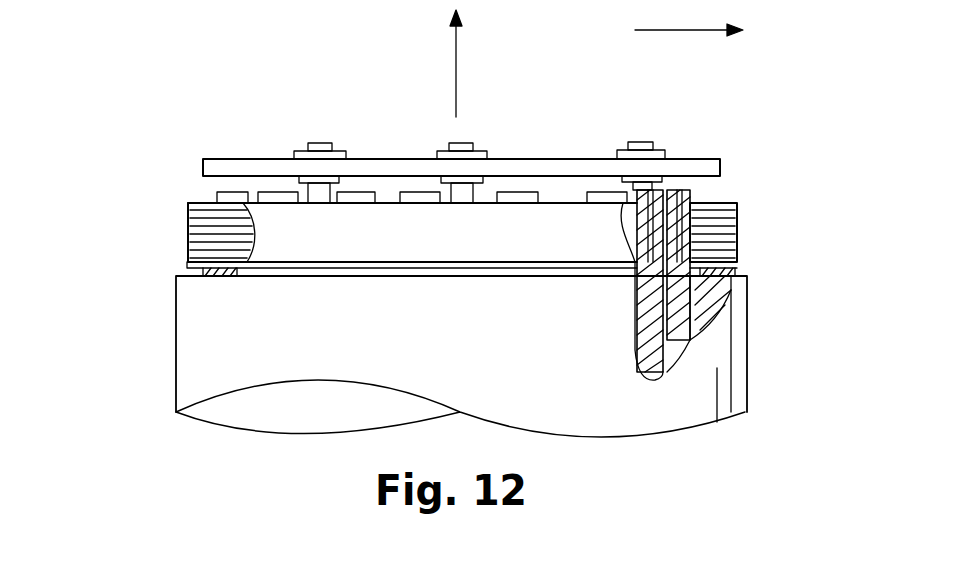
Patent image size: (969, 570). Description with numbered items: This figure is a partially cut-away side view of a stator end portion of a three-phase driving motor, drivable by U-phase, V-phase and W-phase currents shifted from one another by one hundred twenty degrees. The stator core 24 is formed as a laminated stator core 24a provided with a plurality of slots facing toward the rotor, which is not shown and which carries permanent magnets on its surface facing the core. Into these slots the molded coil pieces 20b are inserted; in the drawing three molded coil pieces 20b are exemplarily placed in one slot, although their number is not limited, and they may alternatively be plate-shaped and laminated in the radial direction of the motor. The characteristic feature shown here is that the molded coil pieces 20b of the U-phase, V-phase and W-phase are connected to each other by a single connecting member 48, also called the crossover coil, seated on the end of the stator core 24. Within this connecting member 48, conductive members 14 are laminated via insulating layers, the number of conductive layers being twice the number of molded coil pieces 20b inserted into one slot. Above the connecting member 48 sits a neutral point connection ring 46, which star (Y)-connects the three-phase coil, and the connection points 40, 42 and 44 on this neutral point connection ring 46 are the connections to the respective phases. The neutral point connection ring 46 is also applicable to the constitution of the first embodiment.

The conductive members 14 is at (188, 238).
The molded coil piece 20b is at (747, 276).
The stator core 24 is at (398, 356).
The laminated stator core 24a is at (193, 382).
The connection point 40 is at (466, 130).
The connection point 42 is at (648, 128).
The connection point 44 is at (317, 132).
The neutral point connection ring 46 is at (710, 161).
The connecting member 48 is at (380, 232).